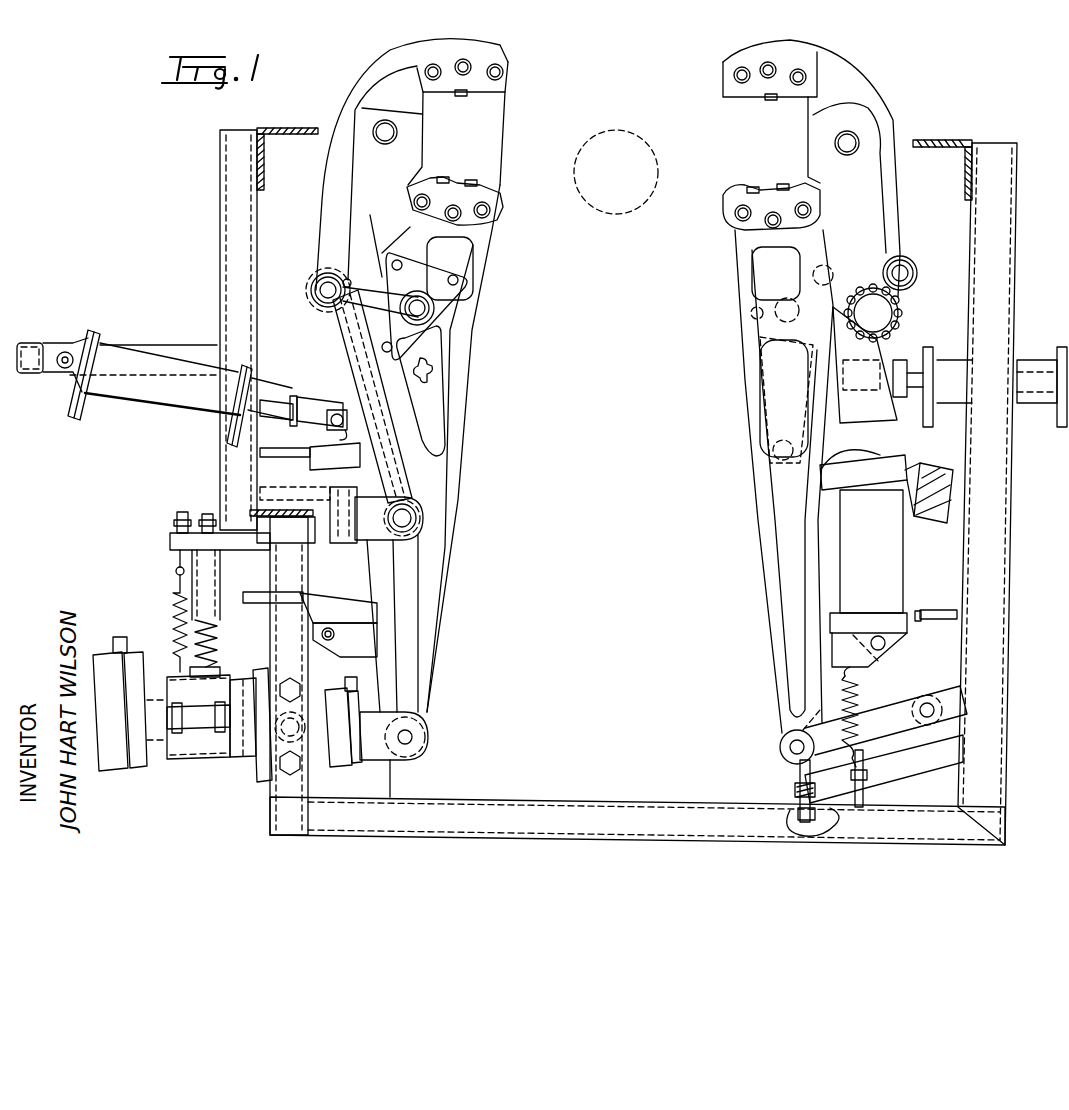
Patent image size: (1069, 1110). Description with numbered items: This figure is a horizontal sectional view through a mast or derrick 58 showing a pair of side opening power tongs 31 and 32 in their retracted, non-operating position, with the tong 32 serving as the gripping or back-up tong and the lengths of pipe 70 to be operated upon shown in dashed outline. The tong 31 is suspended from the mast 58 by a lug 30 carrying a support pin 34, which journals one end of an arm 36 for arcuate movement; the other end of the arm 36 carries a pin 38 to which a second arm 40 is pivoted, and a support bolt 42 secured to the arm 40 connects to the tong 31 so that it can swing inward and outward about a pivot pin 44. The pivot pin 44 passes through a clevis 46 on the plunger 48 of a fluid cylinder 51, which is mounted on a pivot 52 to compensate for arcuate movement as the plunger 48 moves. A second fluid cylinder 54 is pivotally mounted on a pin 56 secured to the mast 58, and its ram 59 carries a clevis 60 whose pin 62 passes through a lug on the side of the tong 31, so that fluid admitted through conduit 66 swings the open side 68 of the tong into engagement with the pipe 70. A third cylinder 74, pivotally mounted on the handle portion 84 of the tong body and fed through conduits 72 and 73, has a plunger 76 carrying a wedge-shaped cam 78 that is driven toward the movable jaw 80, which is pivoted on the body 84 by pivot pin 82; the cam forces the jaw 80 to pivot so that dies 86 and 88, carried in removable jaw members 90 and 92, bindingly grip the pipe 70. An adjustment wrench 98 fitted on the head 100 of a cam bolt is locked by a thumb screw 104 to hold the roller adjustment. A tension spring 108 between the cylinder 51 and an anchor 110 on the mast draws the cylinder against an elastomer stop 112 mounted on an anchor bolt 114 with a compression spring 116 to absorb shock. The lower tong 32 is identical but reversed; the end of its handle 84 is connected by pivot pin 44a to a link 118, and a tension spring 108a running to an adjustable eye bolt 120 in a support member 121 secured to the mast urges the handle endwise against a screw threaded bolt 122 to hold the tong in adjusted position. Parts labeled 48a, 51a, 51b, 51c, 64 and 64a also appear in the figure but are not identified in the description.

The lug 30 is at (365, 540).
The side opening tong 31 is at (372, 50).
The side opening tong 32 is at (870, 52).
The support pin 34 is at (405, 522).
The arm 36 is at (335, 312).
The pin 38 is at (323, 283).
The second arm 40 is at (424, 306).
The support bolt 42 is at (417, 312).
The pivot pin 44 is at (410, 735).
The pivot pin 44a is at (785, 748).
The clevis 46 is at (396, 760).
The plunger 48 is at (395, 712).
The pivot block 48a is at (392, 760).
The fluid cylinder 51 is at (250, 755).
The cylinder head 51a is at (130, 637).
The piston rod 51b is at (255, 642).
The cylinder end 51c is at (355, 690).
The pivot 52 is at (305, 768).
The second fluid actuated cylinder 54 is at (160, 350).
The pin 56 is at (72, 348).
The mast or derrick 58 is at (210, 130).
The ram 59 is at (290, 398).
The clevis 60 is at (285, 400).
The pin 62 is at (325, 427).
The flange 64 is at (230, 430).
The flange 64a is at (933, 413).
The conduit 66 is at (78, 418).
The open side 68 is at (467, 128).
The pipe 70 is at (600, 208).
The conduit 72 is at (262, 592).
The conduit 73 is at (320, 462).
The third fluid actuated cylinder 74 is at (368, 575).
The plunger 76 is at (335, 432).
The wedge-shaped cam 78 is at (320, 402).
The movable jaw 80 is at (372, 82).
The pivot pin 82 is at (385, 134).
The handle portion 84 is at (418, 620).
The die 86 is at (443, 177).
The die 88 is at (466, 96).
The removable jaw member 90 is at (490, 200).
The removable jaw member 92 is at (507, 82).
The adjustment wrench 98 is at (433, 355).
The head 100 is at (345, 275).
The thumb screw 104 is at (430, 370).
The tension spring 108 is at (175, 595).
The tension spring 108a is at (860, 675).
The anchor 110 is at (172, 540).
The stop 112 is at (220, 672).
The anchor bolt 114 is at (207, 514).
The compression spring 116 is at (210, 645).
The link 118 is at (875, 705).
The adjustable eye bolt 120 is at (178, 518).
The support member 121 is at (942, 775).
The screw threaded bolt 122 is at (798, 770).